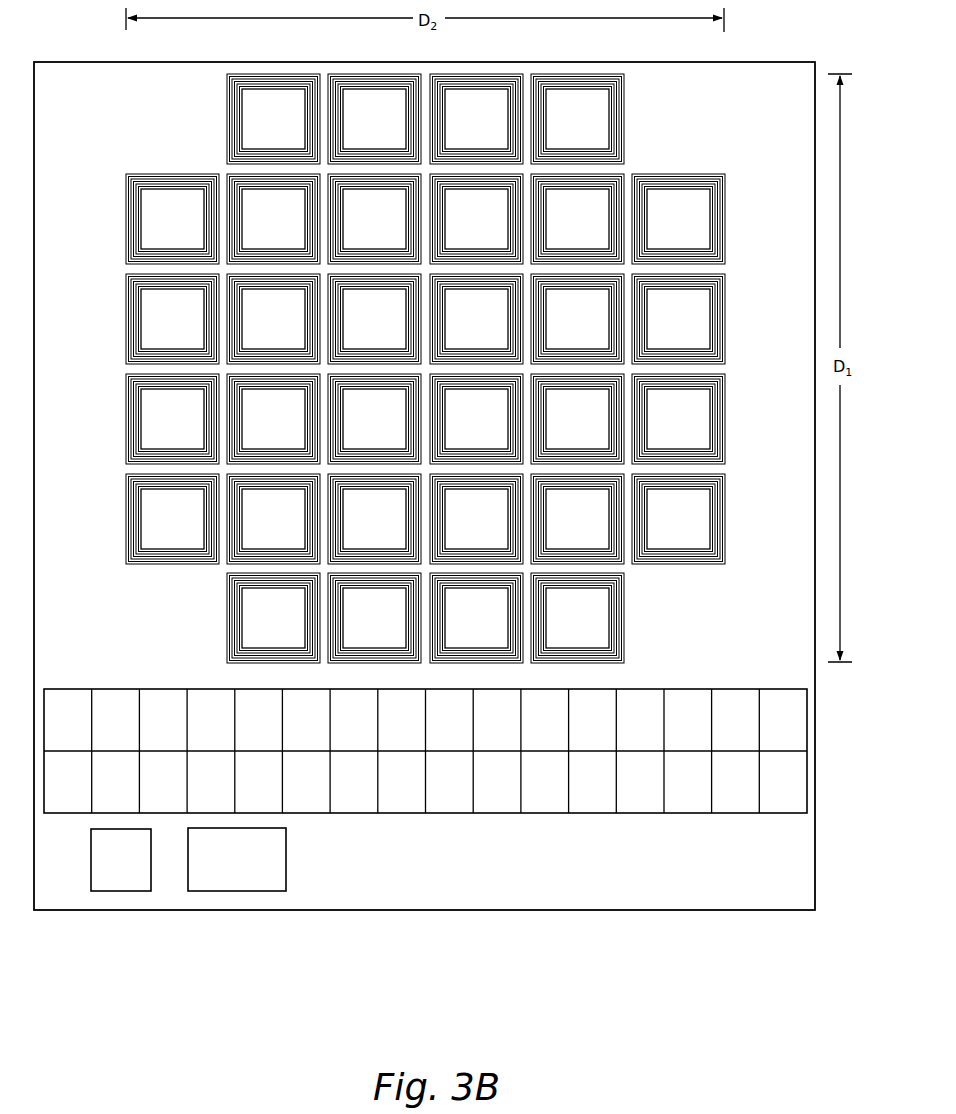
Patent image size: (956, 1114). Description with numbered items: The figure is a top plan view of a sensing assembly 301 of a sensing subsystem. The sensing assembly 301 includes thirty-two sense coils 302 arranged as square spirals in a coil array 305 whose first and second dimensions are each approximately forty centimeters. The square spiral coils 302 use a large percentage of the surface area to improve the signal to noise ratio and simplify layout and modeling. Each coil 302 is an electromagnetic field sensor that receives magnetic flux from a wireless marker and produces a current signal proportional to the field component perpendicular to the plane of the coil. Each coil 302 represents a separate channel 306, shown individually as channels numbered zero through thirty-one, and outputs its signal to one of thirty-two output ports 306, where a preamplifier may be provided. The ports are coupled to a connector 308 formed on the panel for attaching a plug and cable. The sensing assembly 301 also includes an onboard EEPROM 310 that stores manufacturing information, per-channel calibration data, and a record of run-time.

The sensing assembly 301 is at (455, 954).
The sense coils 302 is at (725, 259).
The coil array 305 is at (689, 135).
The channels (output ports) 306 is at (689, 813).
The connector 308 is at (232, 891).
The EEPROM 310 is at (112, 891).